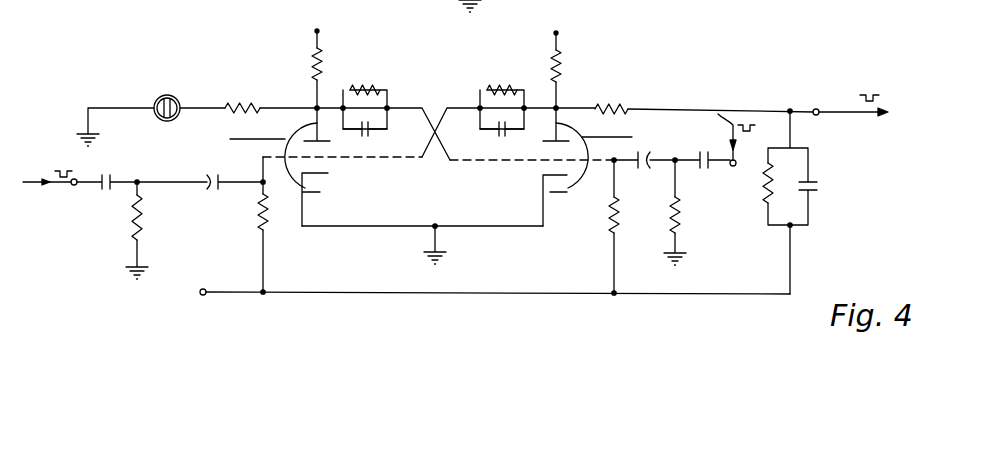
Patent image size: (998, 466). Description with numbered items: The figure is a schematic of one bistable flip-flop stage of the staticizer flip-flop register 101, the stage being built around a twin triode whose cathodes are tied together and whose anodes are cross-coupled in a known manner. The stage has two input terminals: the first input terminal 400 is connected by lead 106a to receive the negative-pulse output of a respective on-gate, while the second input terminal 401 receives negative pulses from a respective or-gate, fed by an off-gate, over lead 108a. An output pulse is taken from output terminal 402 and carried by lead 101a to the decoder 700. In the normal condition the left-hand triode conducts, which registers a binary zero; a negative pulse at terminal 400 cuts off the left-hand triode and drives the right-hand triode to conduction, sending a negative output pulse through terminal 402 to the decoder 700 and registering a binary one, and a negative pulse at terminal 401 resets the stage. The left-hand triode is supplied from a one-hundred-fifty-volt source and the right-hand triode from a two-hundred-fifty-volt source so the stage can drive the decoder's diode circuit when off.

The staticizer flip-flop register 101 is at (681, 319).
The lead 106a is at (28, 177).
The input terminal 400 is at (71, 186).
The lead 108a is at (718, 114).
The second input terminal 401 is at (736, 160).
The output terminal 402 is at (815, 108).
The output lead to decoder 101a is at (834, 114).
The decoder 700 is at (931, 117).